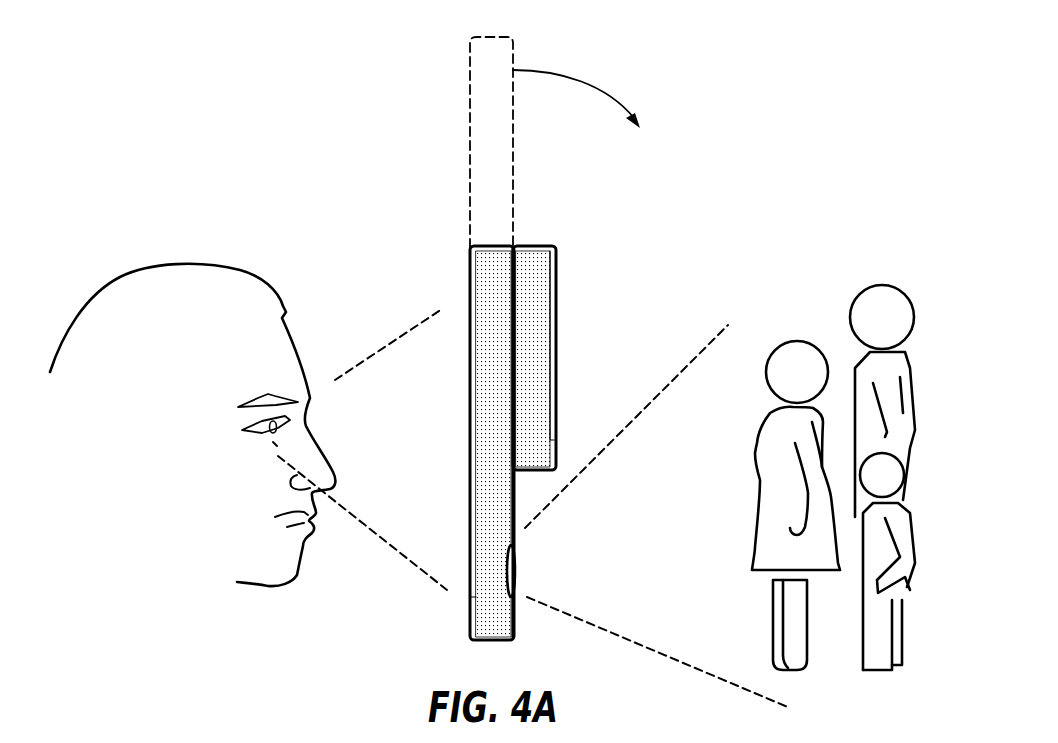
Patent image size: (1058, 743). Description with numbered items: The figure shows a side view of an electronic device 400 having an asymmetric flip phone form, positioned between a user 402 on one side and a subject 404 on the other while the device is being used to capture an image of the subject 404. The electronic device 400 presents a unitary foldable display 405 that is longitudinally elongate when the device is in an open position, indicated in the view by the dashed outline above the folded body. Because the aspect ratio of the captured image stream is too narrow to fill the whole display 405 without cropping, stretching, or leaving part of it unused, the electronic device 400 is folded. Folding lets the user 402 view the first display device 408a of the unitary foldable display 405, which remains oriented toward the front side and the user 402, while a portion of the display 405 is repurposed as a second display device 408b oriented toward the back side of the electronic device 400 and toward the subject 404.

The electronic device 400 is at (563, 250).
The user 402 is at (94, 292).
The subject 404 is at (775, 648).
The unitary foldable display 405 is at (470, 275).
The first display device 408a is at (470, 305).
The second display device 408b is at (557, 303).